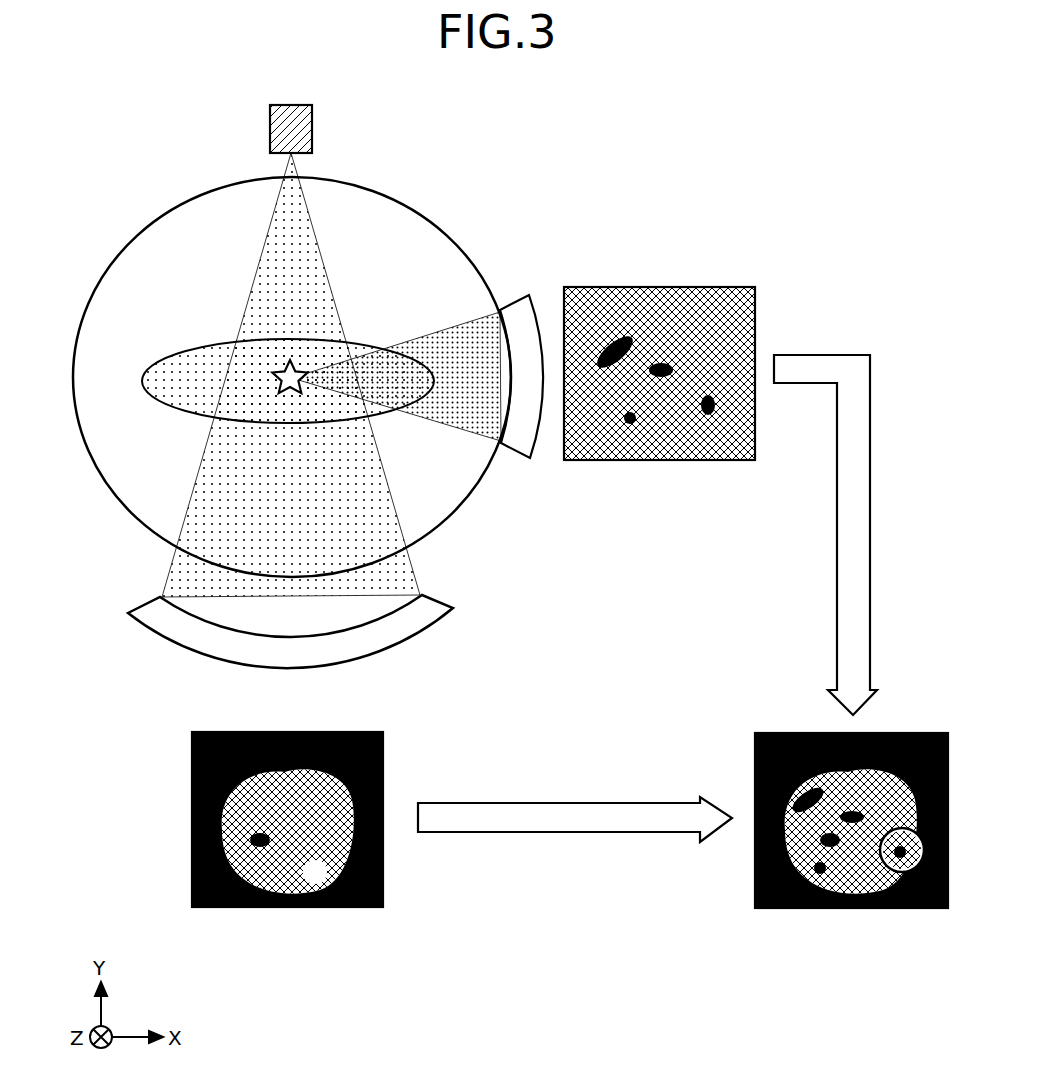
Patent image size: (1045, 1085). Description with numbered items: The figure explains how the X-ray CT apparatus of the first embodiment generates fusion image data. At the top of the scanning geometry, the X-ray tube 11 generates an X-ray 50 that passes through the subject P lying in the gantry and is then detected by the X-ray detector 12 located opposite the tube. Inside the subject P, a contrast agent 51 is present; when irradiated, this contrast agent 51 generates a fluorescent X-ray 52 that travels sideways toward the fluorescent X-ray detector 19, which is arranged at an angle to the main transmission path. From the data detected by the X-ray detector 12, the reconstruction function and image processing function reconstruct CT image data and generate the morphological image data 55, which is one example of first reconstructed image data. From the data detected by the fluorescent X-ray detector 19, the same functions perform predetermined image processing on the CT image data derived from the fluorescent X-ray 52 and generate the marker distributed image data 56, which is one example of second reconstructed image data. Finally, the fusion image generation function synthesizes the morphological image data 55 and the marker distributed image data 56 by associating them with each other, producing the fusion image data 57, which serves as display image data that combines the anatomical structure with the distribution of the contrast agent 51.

The X-ray tube 11 is at (313, 125).
The X-ray detector 12 is at (453, 608).
The fluorescent X-ray detector 19 is at (522, 293).
The X-ray 50 is at (243, 305).
The contrast agent 51 is at (268, 386).
The fluorescent X-ray 52 is at (448, 430).
The subject P is at (143, 380).
The morphological image data 55 is at (333, 732).
The marker distributed image data 56 is at (705, 287).
The fusion image data 57 is at (895, 733).